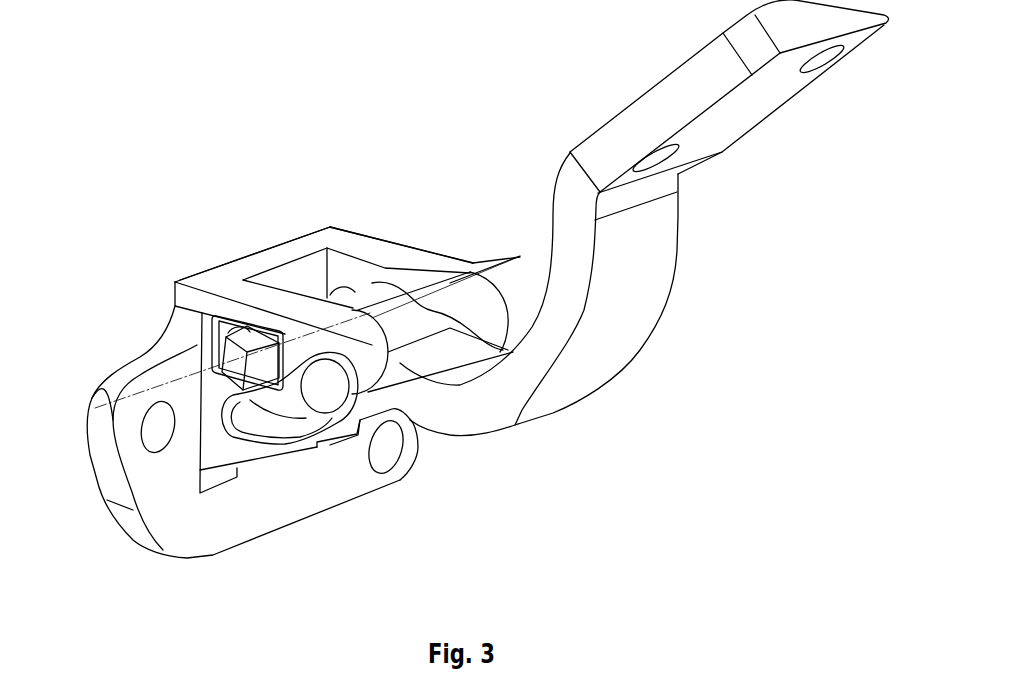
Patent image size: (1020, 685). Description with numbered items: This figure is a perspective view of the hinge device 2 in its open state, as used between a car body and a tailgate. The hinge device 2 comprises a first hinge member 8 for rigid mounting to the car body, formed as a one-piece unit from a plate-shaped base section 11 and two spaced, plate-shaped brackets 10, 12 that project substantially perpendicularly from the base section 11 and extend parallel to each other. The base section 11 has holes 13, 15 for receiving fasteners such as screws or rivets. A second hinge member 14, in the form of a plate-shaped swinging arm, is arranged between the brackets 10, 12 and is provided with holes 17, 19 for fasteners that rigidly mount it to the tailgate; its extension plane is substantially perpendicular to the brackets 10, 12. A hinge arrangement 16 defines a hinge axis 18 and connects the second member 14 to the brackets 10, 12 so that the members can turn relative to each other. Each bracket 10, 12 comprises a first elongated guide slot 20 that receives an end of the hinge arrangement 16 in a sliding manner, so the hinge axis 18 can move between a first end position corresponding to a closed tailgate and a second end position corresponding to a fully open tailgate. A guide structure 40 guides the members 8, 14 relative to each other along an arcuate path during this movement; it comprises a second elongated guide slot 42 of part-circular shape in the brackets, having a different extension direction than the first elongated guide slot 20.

The hinge device 2 is at (312, 142).
The first hinge member 8 is at (200, 523).
The bracket 10 is at (282, 303).
The base section 11 is at (278, 255).
The bracket 12 is at (393, 257).
The hole 13 is at (150, 432).
The second hinge member 14 is at (605, 347).
The hole 15 is at (387, 447).
The hinge arrangement 16 is at (365, 297).
The hole 17 is at (667, 161).
The hinge axis 18 is at (106, 395).
The hole 19 is at (823, 58).
The first elongated guide slot 20 is at (195, 347).
The guide structure 40 is at (267, 456).
The second elongated guide slot 42 is at (290, 440).